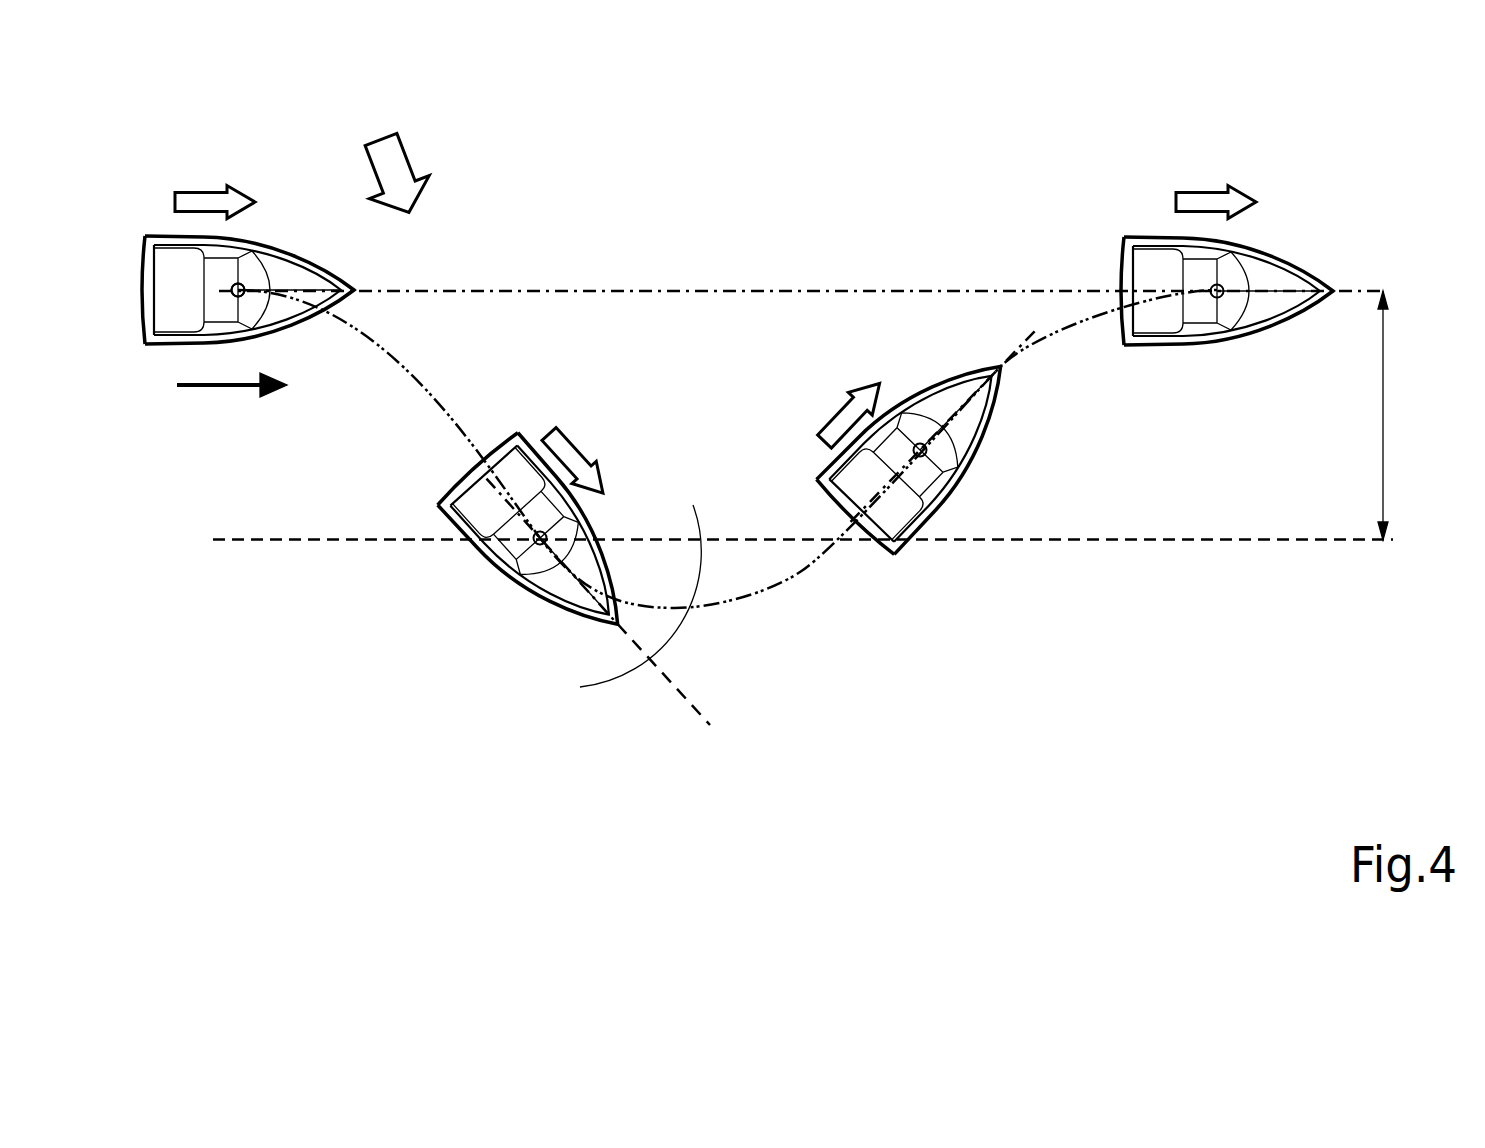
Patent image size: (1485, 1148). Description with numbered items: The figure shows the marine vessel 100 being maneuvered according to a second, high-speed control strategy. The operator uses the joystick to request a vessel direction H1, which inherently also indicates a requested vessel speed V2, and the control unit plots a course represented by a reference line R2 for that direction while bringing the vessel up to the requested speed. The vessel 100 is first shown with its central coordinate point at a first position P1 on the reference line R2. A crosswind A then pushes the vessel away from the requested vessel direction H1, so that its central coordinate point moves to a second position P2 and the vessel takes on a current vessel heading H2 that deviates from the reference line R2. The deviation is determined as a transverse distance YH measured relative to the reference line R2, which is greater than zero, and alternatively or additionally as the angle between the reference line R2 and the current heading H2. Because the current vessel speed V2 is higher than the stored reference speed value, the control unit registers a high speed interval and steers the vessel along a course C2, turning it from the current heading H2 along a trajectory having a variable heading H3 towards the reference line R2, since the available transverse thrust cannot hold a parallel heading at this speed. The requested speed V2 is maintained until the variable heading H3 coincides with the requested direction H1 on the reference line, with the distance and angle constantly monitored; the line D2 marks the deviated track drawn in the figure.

The vessel 100 is at (173, 325).
The first position P1 is at (242, 283).
The second position P2 is at (538, 548).
The requested vessel direction H1 is at (715, 188).
The current vessel heading H2 is at (576, 456).
The variable heading H3 is at (918, 443).
The crosswind A is at (402, 173).
The requested vessel speed V2 is at (232, 409).
The reference line R2 is at (755, 288).
The deviation limit line D2 is at (1137, 541).
The course C2 is at (816, 572).
The transverse distance YH is at (1407, 415).